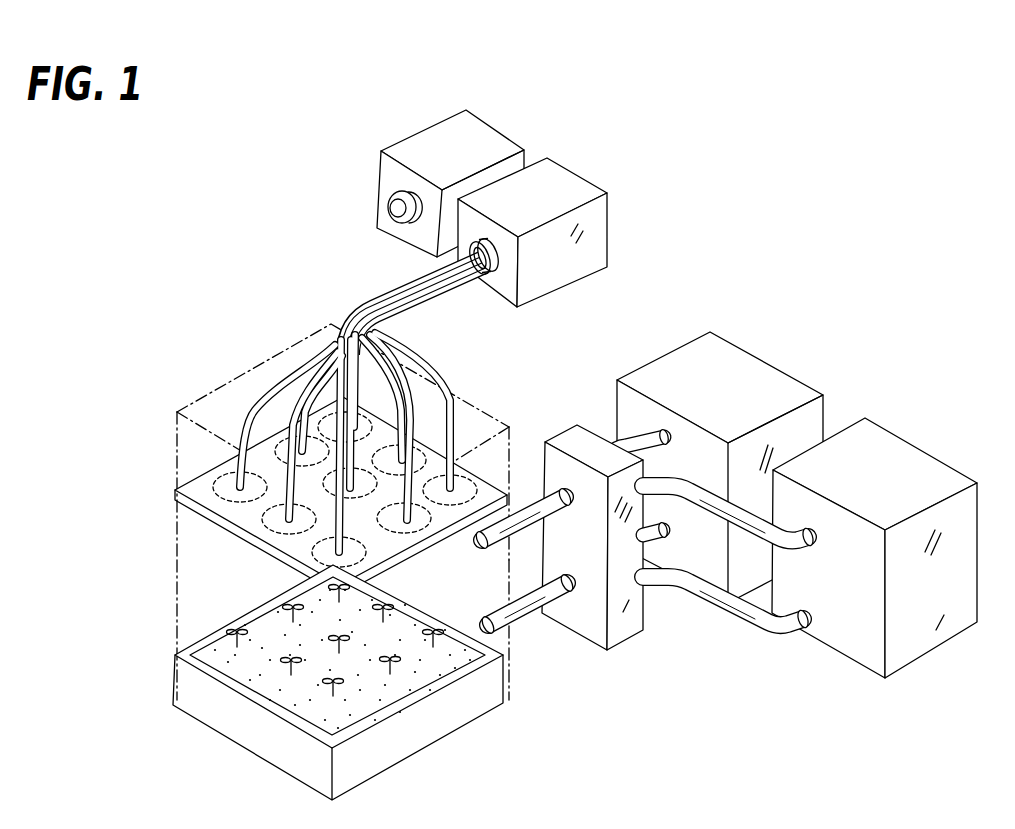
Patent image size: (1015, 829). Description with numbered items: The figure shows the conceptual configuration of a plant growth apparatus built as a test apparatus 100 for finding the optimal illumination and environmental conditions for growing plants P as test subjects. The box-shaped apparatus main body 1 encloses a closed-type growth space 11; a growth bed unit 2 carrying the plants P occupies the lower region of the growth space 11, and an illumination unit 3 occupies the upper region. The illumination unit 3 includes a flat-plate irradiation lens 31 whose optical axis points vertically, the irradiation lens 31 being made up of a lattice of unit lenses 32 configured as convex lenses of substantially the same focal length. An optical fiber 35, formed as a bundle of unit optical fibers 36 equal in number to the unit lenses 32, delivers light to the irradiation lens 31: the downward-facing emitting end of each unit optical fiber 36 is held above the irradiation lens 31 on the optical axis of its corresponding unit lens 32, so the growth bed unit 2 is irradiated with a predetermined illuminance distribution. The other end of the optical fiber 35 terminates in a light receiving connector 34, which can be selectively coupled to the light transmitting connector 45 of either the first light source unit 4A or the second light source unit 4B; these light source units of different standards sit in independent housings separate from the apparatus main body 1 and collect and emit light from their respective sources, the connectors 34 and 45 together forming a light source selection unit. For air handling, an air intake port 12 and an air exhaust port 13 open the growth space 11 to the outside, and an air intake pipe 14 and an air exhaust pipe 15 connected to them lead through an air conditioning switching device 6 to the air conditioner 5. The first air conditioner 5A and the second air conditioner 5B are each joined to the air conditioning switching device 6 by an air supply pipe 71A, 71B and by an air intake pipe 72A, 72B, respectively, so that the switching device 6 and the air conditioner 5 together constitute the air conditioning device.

The test apparatus 100 is at (552, 451).
The apparatus main body 1 is at (331, 550).
The growth bed unit 2 is at (210, 650).
The illumination unit 3 is at (173, 423).
The first light source unit 4A is at (588, 187).
The second light source unit 4B is at (505, 148).
The air conditioner 5 is at (717, 506).
The first air conditioner 5A is at (928, 450).
The second air conditioner 5B is at (787, 377).
The air conditioning switching device 6 is at (627, 642).
The growth space 11 is at (200, 539).
The air intake port 12 is at (507, 643).
The air exhaust port 13 is at (483, 550).
The air intake pipe 14 is at (523, 615).
The air exhaust pipe 15 is at (516, 521).
The irradiation lens 31 is at (188, 510).
The unit lenses 32 is at (207, 470).
The light receiving connector 34 is at (471, 280).
The optical fiber 35 is at (375, 292).
The unit optical fibers 36 is at (395, 397).
The light transmitting connector 45 is at (388, 208).
The air supply pipe 71A is at (773, 640).
The air supply pipe 71B is at (652, 546).
The air intake pipe 72A is at (744, 527).
The air intake pipe 72B is at (637, 440).
The plants P is at (235, 650).